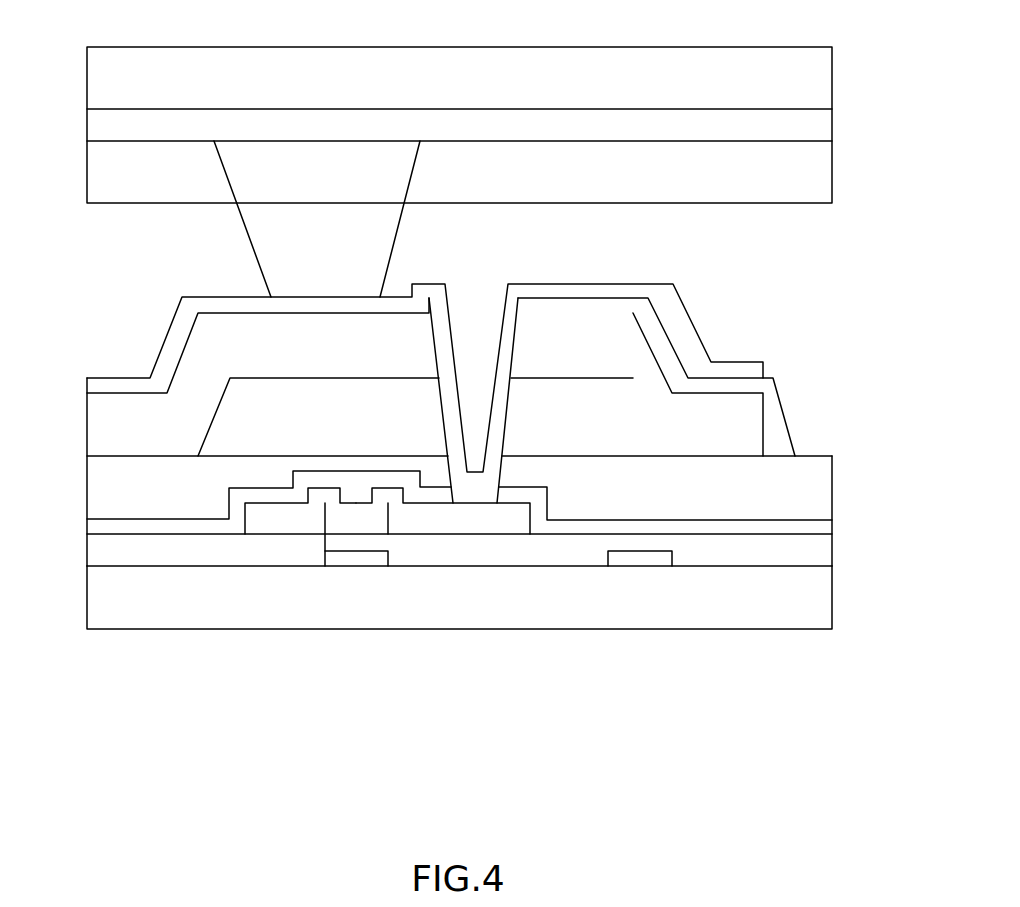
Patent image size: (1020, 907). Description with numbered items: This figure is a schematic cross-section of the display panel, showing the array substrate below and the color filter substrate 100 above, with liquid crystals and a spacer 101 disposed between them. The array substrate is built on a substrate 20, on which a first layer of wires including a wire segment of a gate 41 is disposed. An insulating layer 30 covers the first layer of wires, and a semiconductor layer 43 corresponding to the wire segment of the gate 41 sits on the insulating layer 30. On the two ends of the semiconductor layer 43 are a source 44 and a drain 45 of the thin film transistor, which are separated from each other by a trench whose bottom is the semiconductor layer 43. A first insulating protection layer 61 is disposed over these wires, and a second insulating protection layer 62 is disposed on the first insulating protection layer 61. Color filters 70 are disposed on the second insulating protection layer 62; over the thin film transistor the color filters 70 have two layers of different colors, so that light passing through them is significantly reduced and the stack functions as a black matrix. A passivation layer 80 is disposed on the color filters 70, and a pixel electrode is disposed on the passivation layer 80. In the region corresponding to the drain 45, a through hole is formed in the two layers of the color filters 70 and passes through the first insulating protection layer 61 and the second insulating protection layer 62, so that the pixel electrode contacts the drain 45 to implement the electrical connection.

The color filter substrate 100 is at (847, 123).
The spacer 101 is at (307, 230).
The passivation layer 80 is at (170, 343).
The color filters 70 is at (180, 410).
The second insulating protection layer 62 is at (112, 478).
The first insulating protection layer 61 is at (113, 523).
The insulating layer 30 is at (790, 555).
The substrate 20 is at (803, 617).
The source 44 is at (272, 518).
The semiconductor layer 43 is at (338, 517).
The gate 41 is at (373, 557).
The drain 45 is at (465, 505).